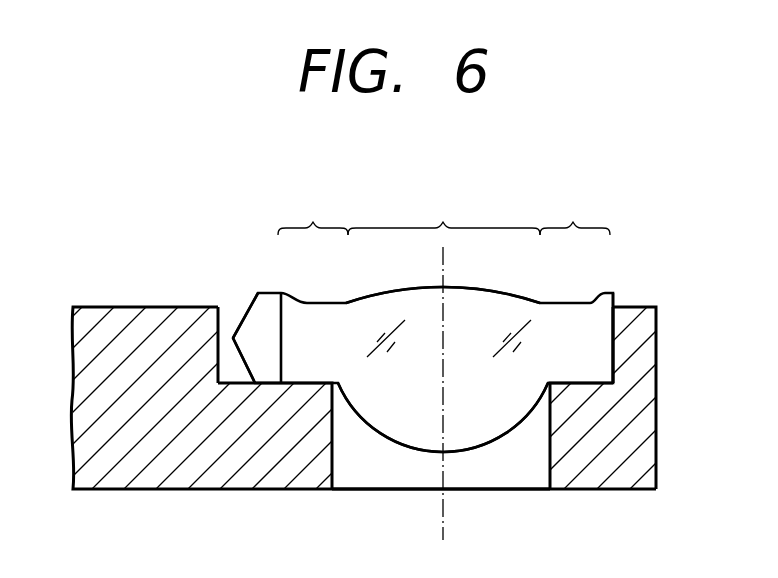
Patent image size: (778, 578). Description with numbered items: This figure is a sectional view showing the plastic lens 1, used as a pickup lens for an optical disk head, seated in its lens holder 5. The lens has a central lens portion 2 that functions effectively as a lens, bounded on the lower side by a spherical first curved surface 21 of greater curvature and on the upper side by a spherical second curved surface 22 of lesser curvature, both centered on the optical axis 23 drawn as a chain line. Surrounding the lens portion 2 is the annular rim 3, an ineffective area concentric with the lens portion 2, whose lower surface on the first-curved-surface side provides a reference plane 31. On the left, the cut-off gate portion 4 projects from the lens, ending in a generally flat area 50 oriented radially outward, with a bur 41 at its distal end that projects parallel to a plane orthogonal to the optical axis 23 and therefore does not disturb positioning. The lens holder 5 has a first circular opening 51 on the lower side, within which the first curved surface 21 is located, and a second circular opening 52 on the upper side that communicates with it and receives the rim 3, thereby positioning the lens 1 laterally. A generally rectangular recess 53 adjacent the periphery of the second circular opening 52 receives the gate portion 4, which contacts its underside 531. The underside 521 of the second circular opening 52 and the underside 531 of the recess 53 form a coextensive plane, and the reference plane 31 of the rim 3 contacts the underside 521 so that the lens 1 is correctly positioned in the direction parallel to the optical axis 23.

The plastic lens 1 is at (496, 274).
The lens portion 2 is at (444, 215).
The rim 3 is at (444, 215).
The gate portion 4 is at (265, 300).
The bur 41 is at (242, 338).
The flat area 50 is at (246, 300).
The first curved surface 21 is at (407, 447).
The second curved surface 22 is at (410, 287).
The optical axis 23 is at (445, 510).
The reference plane 31 is at (612, 333).
The lens holder 5 is at (172, 477).
The first circular opening 51 is at (535, 473).
The second circular opening 52 is at (617, 358).
The underside of the second circular opening 521 is at (616, 332).
The recess 53 is at (228, 372).
The underside of the recess 531 is at (245, 378).